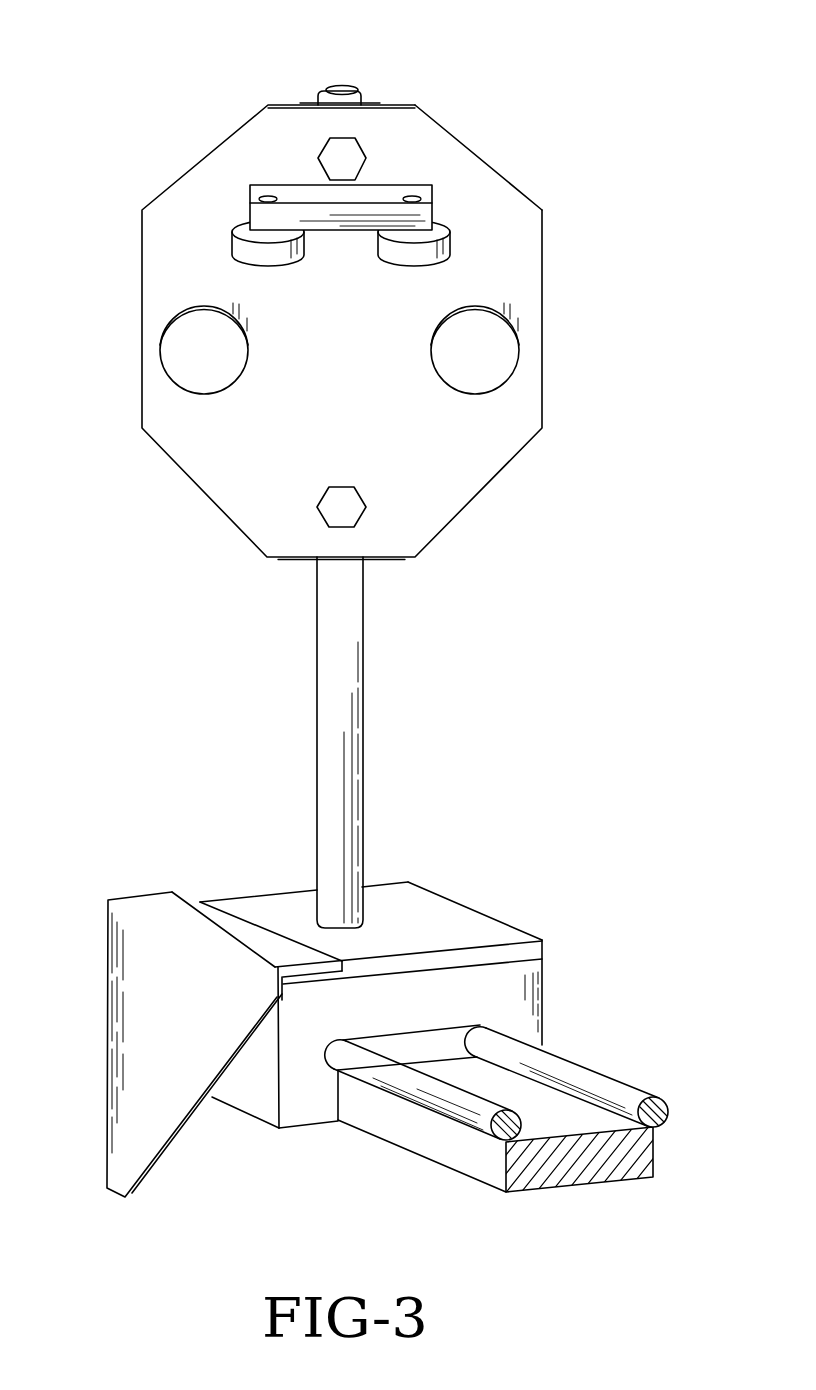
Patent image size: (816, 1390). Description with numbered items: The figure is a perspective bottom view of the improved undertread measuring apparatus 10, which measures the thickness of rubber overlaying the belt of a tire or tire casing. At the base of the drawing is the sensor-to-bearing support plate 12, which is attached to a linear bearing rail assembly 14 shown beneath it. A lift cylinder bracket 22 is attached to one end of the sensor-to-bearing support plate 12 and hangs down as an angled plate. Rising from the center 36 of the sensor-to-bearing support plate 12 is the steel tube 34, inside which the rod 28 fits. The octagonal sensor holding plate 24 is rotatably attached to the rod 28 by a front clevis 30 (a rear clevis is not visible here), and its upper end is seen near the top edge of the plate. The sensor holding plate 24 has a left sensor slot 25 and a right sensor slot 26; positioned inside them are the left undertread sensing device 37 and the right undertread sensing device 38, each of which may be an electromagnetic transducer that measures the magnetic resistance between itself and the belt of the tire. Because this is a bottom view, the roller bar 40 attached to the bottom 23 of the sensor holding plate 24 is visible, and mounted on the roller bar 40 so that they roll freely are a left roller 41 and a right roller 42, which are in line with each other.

The improved undertread measuring apparatus 10 is at (182, 96).
The sensor-to-bearing support plate 12 is at (472, 930).
The linear bearing rail assembly 14 is at (598, 1090).
The lift cylinder bracket 22 is at (132, 992).
The bottom of the sensor holding plate 23 is at (215, 182).
The sensor holding plate 24 is at (447, 127).
The left sensor slot 25 is at (183, 302).
The right sensor slot 26 is at (507, 302).
The rod 28 is at (343, 91).
The front clevis 30 is at (366, 101).
The steel tube 34 is at (343, 685).
The center of the sensor-to-bearing support plate 36 is at (360, 927).
The left undertread sensing device 37 is at (198, 355).
The right undertread sensing device 38 is at (497, 363).
The roller bar 40 is at (393, 192).
The left roller 41 is at (243, 243).
The right roller 42 is at (440, 245).